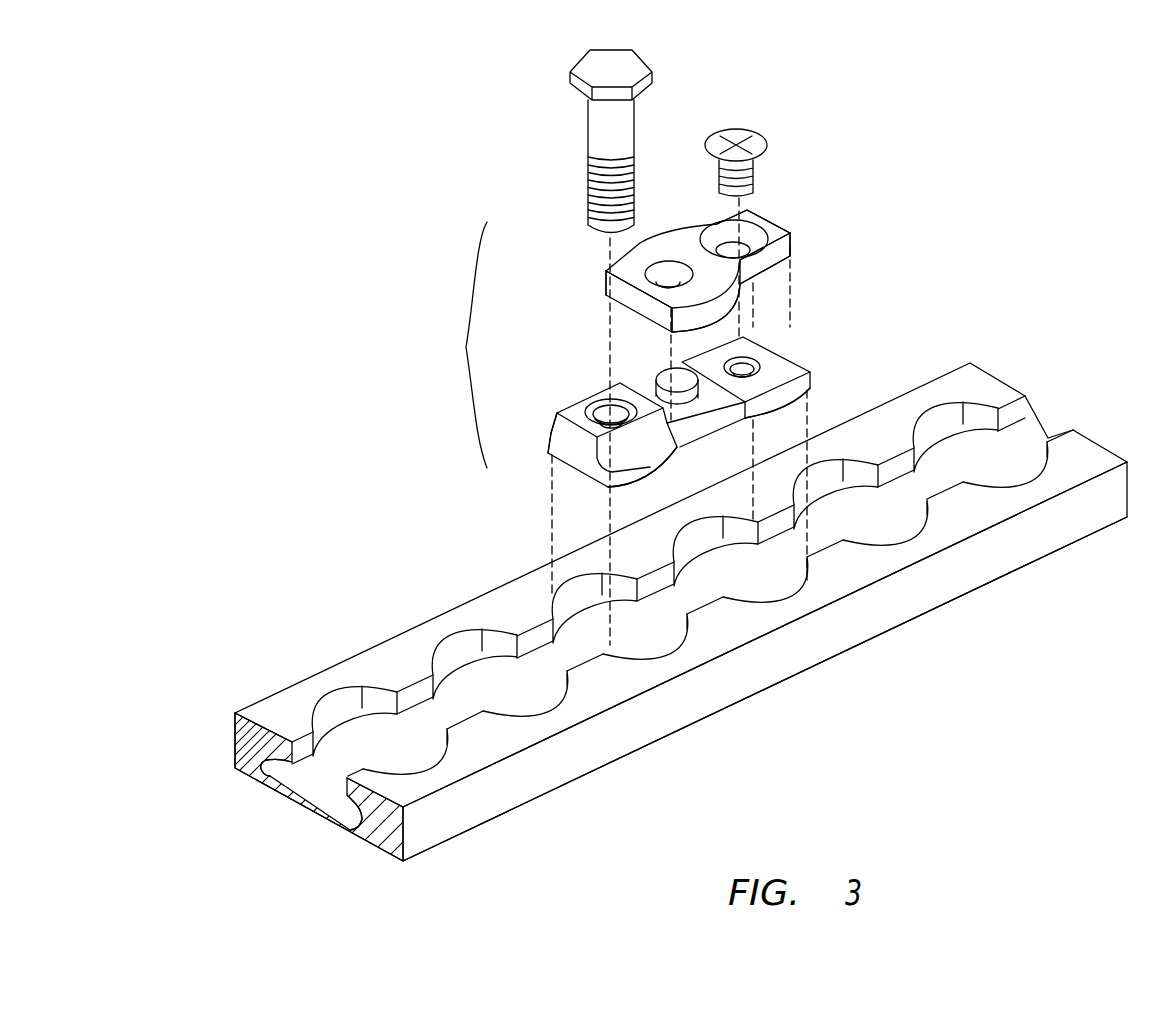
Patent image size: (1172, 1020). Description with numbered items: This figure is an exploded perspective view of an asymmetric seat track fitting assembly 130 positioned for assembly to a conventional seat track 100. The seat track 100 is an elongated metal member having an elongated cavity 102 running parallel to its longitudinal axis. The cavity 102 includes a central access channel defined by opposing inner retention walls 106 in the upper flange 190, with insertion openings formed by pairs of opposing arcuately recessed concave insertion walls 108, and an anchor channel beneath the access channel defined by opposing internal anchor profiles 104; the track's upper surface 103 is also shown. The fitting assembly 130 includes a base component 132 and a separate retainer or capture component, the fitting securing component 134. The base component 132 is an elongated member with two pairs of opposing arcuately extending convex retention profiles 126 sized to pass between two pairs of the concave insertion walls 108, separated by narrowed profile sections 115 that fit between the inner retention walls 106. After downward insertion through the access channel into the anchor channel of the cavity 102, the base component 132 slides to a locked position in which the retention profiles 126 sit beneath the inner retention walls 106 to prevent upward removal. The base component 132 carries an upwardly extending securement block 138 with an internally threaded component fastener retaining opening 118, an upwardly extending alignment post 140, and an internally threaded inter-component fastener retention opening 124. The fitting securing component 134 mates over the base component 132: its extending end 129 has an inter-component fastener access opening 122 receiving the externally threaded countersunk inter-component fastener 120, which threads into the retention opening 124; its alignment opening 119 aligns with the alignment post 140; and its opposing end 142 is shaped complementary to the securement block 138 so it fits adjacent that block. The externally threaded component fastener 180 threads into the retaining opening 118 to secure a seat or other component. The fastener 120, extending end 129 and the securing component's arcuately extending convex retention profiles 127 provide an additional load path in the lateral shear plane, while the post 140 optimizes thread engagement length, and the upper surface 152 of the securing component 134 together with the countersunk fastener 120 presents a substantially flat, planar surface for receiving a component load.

The seat track 100 is at (663, 631).
The elongated cavity 102 is at (1030, 420).
The upper surface 103 is at (877, 566).
The internal anchor profiles 104 is at (268, 770).
The inner retention walls 106 is at (1010, 410).
The arcuately recessed concave insertion walls 108 is at (978, 400).
The narrowed profile sections 115 is at (697, 425).
The component fastener retaining opening 118 is at (553, 460).
The alignment opening 119 is at (672, 285).
The inter-component fastener 120 is at (745, 128).
The inter-component fastener access opening 122 is at (736, 246).
The inter-component fastener retention opening 124 is at (752, 360).
The arcuately extending convex retention profiles 126 is at (790, 293).
The arcuately extending convex retention profiles 127 is at (612, 258).
The extending end 129 is at (745, 212).
The asymmetric seat track fitting assembly 130 is at (466, 349).
The base component 132 is at (779, 349).
The fitting securing component 134 is at (768, 232).
The upwardly extending securement block 138 is at (579, 428).
The upwardly extending alignment post 140 is at (700, 393).
The opposing end 142 is at (608, 288).
The upper surface 152 is at (692, 224).
The component fastener 180 is at (590, 140).
The upper flange 190 is at (287, 751).